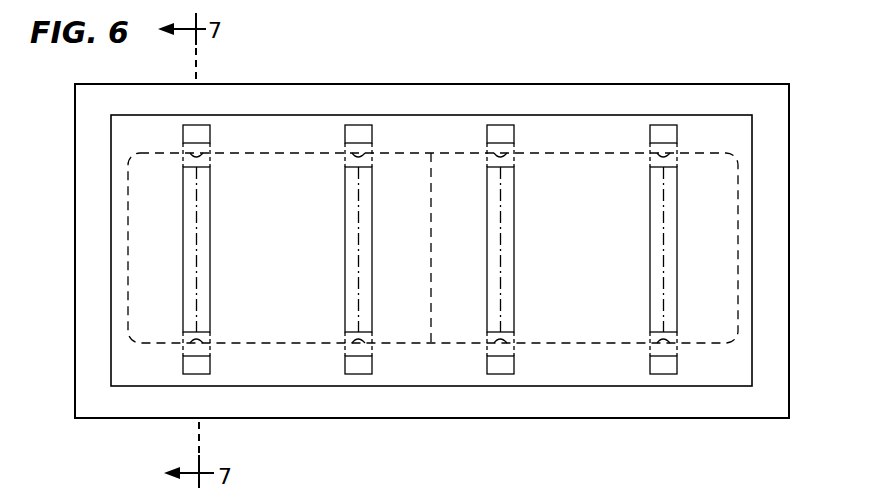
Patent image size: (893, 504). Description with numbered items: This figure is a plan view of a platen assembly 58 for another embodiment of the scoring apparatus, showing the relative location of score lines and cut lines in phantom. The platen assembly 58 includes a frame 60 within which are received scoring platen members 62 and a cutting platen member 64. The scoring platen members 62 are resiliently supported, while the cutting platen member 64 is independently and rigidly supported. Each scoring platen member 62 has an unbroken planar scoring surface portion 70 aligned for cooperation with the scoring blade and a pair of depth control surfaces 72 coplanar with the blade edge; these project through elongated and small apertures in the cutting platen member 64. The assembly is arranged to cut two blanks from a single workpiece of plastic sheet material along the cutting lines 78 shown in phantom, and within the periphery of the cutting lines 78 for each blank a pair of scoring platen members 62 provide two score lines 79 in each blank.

The platen assembly 58 is at (796, 183).
The frame 60 is at (790, 247).
The scoring platen members 62 is at (453, 249).
The cutting platen member 64 is at (475, 250).
The scoring surface portion 70 is at (350, 311).
The depth control surfaces 72 is at (210, 135).
The cutting lines 78 is at (601, 152).
The score lines 79 is at (197, 238).